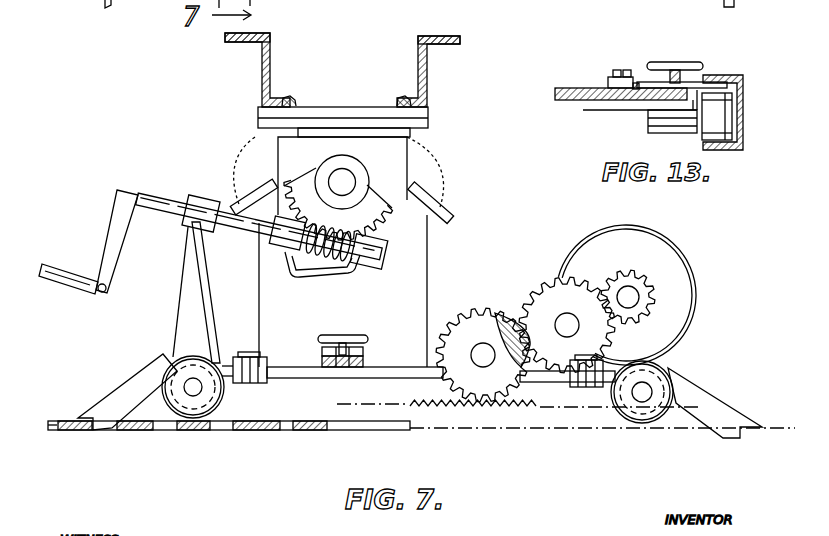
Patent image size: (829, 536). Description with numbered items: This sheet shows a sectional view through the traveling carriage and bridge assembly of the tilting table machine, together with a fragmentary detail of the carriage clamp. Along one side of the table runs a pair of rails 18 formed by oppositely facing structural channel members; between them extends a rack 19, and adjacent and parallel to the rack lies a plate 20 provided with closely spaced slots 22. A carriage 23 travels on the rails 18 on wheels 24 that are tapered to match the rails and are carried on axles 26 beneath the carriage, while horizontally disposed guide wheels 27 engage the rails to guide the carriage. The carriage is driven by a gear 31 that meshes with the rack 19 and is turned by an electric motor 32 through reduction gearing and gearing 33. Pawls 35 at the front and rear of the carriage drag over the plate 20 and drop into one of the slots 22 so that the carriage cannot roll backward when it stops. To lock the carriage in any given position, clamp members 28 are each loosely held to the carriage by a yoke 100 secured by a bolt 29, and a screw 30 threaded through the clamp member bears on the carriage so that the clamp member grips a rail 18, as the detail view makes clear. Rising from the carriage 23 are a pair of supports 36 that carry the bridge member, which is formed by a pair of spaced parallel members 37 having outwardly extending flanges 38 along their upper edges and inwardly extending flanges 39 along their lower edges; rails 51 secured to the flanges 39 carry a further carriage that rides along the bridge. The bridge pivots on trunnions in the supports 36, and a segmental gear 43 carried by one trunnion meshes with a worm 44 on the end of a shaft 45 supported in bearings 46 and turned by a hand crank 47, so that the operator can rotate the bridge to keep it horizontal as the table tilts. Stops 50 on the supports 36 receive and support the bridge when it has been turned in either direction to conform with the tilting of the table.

In FIG. 13, the rails 18 is at (745, 81).
In FIG. 7, the rack 19 is at (510, 406).
In FIG. 7, the plate 20 is at (310, 423).
In FIG. 7, the slots 22 is at (282, 428).
In FIG. 7, the carriage 23 is at (393, 369).
In FIG. 13, the carriage 23 is at (565, 87).
In FIG. 7, the wheels 24 is at (196, 412).
In FIG. 13, the wheels 24 is at (725, 118).
In FIG. 7, the axles 26 is at (192, 386).
In FIG. 7, the guide wheels 27 is at (244, 357).
In FIG. 7, the clamp members 28 is at (322, 359).
In FIG. 13, the clamp members 28 is at (690, 87).
In FIG. 13, the bolt 29 is at (605, 76).
In FIG. 7, the screw 30 is at (320, 338).
In FIG. 13, the screw 30 is at (663, 63).
In FIG. 7, the gear 31 is at (475, 315).
In FIG. 7, the electric motor 32 is at (695, 272).
In FIG. 7, the gearing 33 is at (550, 287).
In FIG. 7, the pawls 35 is at (122, 388).
In FIG. 7, the supports 36 is at (420, 272).
In FIG. 7, the parallel members 37 is at (418, 58).
In FIG. 7, the outwardly extending flanges 38 is at (229, 36).
In FIG. 7, the inwardly extending flanges 39 is at (397, 106).
In FIG. 7, the segmental gear 43 is at (374, 198).
In FIG. 7, the worm 44 is at (324, 262).
In FIG. 7, the shaft 45 is at (247, 234).
In FIG. 7, the bearings 46 is at (205, 200).
In FIG. 7, the hand crank 47 is at (103, 250).
In FIG. 7, the stops 50 is at (240, 204).
In FIG. 7, the rails 51 is at (405, 99).
In FIG. 13, the yoke 100 is at (635, 82).